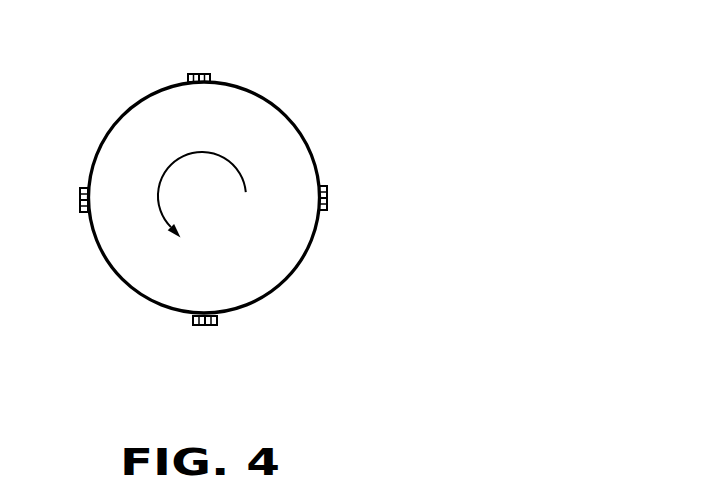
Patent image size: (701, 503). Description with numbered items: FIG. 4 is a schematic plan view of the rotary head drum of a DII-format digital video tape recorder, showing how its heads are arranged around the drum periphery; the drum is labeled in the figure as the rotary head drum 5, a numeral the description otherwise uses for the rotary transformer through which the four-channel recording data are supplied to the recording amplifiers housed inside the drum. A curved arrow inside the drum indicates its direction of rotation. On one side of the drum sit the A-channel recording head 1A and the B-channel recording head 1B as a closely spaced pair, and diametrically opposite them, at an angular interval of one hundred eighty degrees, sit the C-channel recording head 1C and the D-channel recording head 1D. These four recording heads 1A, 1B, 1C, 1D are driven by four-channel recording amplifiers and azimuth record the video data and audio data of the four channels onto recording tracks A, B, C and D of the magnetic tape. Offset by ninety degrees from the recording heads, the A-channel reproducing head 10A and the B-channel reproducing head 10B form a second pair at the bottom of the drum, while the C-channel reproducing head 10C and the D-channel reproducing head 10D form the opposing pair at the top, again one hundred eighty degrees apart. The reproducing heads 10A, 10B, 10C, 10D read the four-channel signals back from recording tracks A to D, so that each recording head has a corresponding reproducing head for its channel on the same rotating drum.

The rotary transformer 5 is at (271, 103).
The A-channel recording head 1A is at (323, 187).
The B-channel recording head 1B is at (323, 211).
The C-channel recording head 1C is at (81, 212).
The D-channel recording head 1D is at (80, 193).
The A-channel reproducing head 10A is at (213, 325).
The B-channel reproducing head 10B is at (195, 325).
The C-channel reproducing head 10C is at (192, 74).
The D-channel reproducing head 10D is at (207, 74).